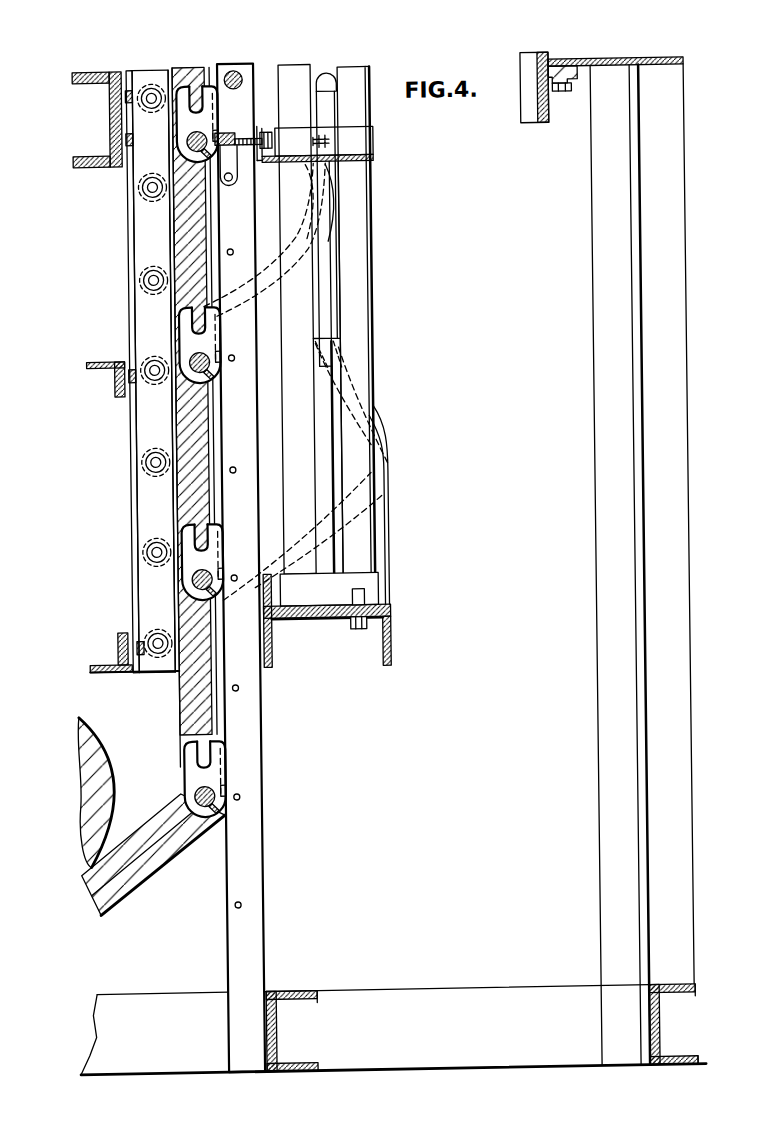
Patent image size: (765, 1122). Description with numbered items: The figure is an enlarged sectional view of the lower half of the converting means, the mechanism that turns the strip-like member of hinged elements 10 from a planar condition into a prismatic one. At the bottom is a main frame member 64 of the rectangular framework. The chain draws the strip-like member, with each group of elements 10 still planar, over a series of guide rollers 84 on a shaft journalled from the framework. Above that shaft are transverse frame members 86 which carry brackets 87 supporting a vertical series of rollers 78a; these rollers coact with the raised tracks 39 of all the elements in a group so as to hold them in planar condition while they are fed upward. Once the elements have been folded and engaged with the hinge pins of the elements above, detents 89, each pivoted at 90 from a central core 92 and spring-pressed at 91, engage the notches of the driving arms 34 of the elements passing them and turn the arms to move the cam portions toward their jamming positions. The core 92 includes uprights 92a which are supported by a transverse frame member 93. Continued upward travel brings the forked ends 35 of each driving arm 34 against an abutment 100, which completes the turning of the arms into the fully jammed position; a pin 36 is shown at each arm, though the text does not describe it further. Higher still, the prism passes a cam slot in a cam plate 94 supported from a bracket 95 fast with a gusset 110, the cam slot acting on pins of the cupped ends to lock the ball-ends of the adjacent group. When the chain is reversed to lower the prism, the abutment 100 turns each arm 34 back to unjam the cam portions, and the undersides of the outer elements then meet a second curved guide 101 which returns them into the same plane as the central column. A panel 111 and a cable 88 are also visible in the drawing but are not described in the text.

The element 10 is at (186, 218).
The driving arm 34 is at (185, 128).
The forked end 35 is at (201, 88).
The pin 36 is at (221, 356).
The raised track 39 is at (176, 246).
The main frame member 64 is at (423, 993).
The roller 78a is at (137, 298).
The guide roller 84 is at (124, 771).
The transverse frame member 86 is at (110, 165).
The bracket 87 is at (134, 542).
The cable 88 is at (331, 246).
The detent 89 is at (229, 130).
The pivot 90 is at (233, 180).
The spring 91 is at (264, 127).
The central core 92 is at (368, 142).
The upright 92a is at (296, 64).
The transverse frame member 93 is at (322, 618).
The cam plate 94 is at (527, 62).
The bracket 95 is at (566, 72).
The abutment 100 is at (235, 68).
The second curved guide 101 is at (386, 463).
The gusset 110 is at (622, 63).
The panel 111 is at (600, 165).